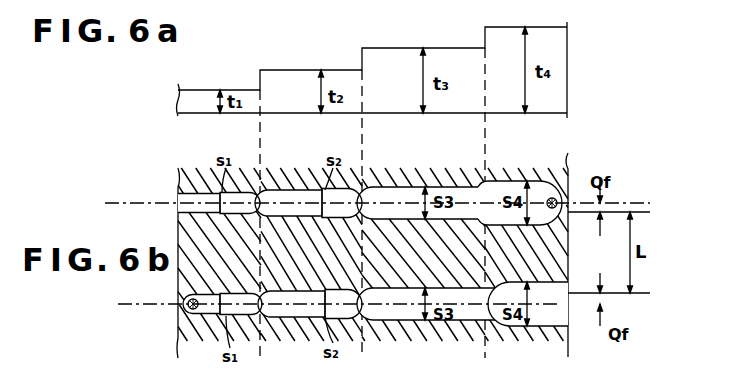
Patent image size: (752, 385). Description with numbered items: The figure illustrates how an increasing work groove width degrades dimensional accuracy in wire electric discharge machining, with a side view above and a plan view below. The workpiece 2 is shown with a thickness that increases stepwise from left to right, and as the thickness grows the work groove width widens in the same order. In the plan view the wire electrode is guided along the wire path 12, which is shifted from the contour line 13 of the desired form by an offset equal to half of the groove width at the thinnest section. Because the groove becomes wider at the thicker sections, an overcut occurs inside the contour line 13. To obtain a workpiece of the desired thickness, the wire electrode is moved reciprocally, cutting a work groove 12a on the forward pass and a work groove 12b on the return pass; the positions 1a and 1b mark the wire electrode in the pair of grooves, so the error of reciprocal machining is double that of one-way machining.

In FIG. 6a, the workpiece 2 is at (276, 80).
In FIG. 6b, the workpiece 2 is at (200, 258).
In FIG. 6b, the wire path 12 is at (125, 203).
In FIG. 6b, the work groove 12a is at (298, 189).
In FIG. 6b, the work groove 12b is at (295, 318).
In FIG. 6b, the upper port hole 1a is at (558, 201).
In FIG. 6b, the lower port hole 1b is at (187, 317).
In FIG. 6b, the contour line 13 is at (618, 212).